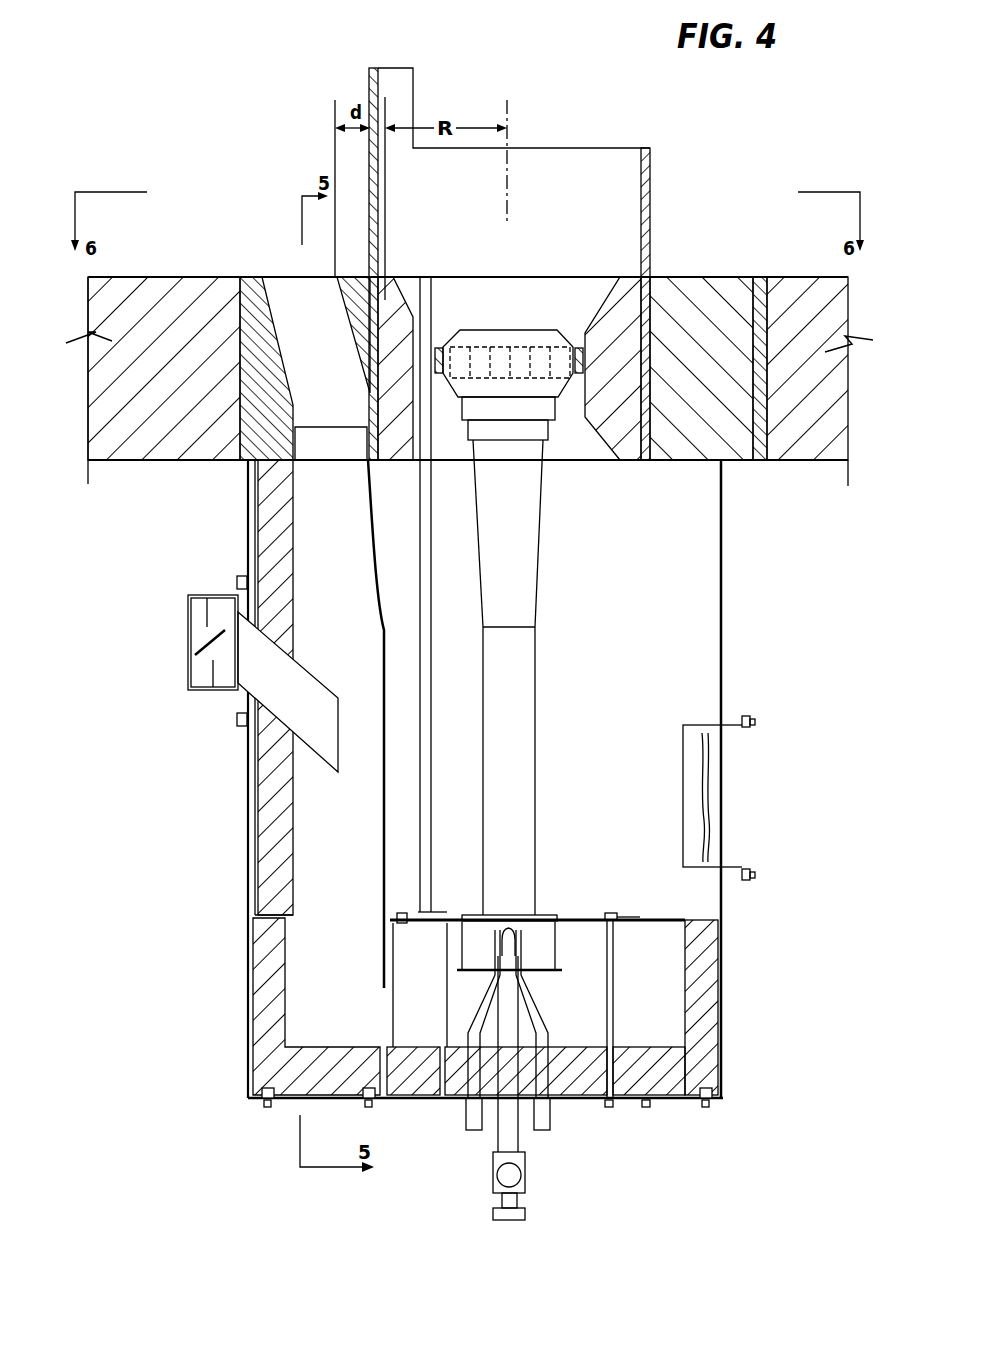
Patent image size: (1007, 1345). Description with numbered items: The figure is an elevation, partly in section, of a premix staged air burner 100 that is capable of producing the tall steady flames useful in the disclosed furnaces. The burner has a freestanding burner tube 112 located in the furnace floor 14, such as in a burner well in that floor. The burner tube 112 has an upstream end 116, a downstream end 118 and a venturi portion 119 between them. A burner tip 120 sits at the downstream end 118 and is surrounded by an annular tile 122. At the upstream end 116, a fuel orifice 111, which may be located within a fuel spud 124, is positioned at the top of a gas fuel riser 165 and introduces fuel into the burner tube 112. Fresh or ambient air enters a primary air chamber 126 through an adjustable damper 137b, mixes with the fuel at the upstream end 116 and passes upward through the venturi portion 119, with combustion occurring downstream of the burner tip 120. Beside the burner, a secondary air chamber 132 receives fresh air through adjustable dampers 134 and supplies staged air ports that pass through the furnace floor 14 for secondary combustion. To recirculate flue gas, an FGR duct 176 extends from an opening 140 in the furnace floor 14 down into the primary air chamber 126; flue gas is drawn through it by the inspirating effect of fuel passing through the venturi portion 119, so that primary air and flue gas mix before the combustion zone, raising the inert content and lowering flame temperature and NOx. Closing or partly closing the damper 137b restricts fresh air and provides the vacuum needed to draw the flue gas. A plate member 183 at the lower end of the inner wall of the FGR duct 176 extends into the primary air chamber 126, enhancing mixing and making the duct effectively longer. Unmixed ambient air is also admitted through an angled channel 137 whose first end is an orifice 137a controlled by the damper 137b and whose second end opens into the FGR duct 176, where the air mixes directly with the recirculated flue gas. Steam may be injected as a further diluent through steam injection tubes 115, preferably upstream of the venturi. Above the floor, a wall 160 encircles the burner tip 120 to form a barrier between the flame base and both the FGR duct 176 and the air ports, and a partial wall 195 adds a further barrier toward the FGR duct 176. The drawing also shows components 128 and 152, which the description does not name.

The premix staged air burner 100 is at (630, 121).
The furnace floor 14 is at (825, 280).
The opening 140 is at (280, 277).
The annular tile 122 is at (386, 280).
The FGR duct 176 is at (330, 334).
The partial wall 195 is at (370, 71).
The wall 160 is at (536, 148).
The downstream end 118 is at (497, 330).
The burner tip 120 is at (536, 330).
The venturi portion 119 is at (538, 588).
The burner tube 112 is at (537, 690).
The secondary air chamber 132 is at (675, 613).
The angled channel 137 is at (258, 665).
The orifice 137a is at (213, 665).
The adjustable damper 137b is at (208, 635).
The adjustable damper 134 is at (708, 793).
The plate member 183 is at (380, 968).
The floor insulation 128 is at (688, 990).
The primary air chamber 126 is at (669, 1013).
The side wall block 152 is at (708, 932).
The fuel spud 124 is at (480, 920).
The upstream end 116 is at (538, 908).
The fuel orifice 111 is at (508, 927).
The gas fuel riser 165 is at (523, 990).
The steam injection tube 115 is at (473, 1132).